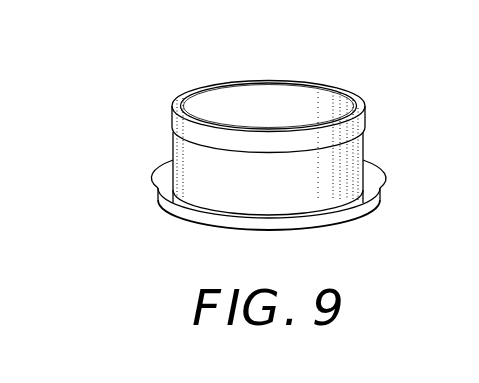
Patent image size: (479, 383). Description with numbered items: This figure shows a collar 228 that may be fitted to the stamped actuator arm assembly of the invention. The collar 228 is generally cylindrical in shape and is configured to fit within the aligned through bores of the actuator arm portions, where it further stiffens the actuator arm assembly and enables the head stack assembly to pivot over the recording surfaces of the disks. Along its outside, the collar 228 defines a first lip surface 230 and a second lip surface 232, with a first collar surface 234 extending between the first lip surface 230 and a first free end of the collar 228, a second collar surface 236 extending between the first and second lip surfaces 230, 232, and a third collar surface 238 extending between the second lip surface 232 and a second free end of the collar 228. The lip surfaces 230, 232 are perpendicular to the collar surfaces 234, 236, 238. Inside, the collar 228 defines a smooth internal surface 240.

The collar 228 is at (205, 46).
The first lip surface 230 is at (172, 122).
The second lip surface 232 is at (172, 190).
The first collar surface 234 is at (362, 111).
The second collar surface 236 is at (356, 158).
The third collar surface 238 is at (377, 189).
The smooth internal surface 240 is at (306, 103).